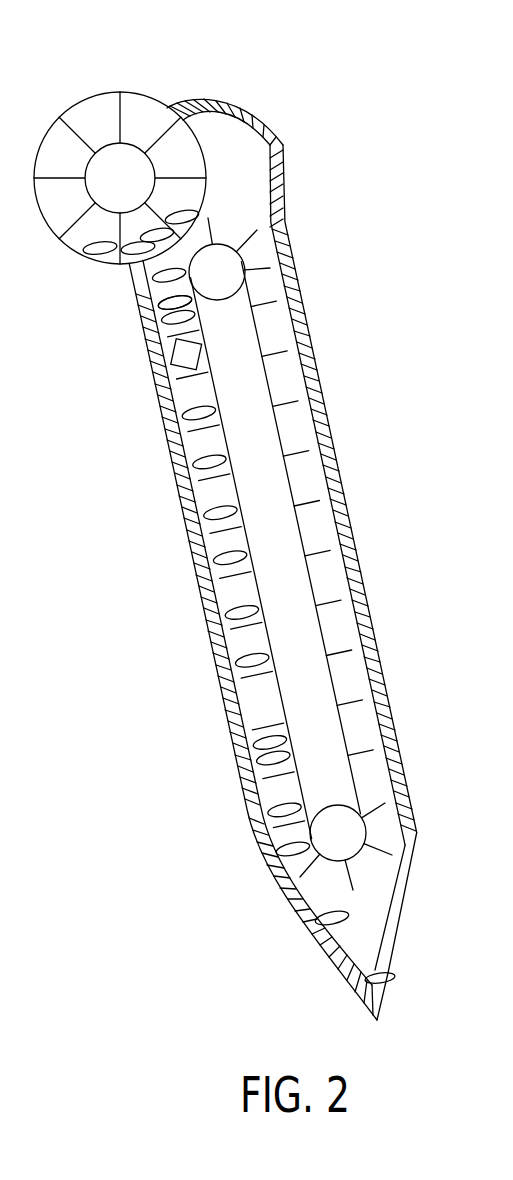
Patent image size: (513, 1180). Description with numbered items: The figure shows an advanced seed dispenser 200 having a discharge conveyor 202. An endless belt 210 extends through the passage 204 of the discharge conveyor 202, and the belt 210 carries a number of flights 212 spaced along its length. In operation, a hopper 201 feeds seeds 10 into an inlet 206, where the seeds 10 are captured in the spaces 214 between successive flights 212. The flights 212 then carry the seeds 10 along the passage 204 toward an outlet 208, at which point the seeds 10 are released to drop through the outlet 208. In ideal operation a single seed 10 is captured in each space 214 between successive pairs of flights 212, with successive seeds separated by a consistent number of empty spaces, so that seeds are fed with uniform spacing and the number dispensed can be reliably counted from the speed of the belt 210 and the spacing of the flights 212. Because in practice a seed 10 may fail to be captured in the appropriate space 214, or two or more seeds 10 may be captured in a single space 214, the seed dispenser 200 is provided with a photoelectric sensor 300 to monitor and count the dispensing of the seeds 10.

The seed dispenser 200 is at (305, 88).
The hopper 201 is at (62, 250).
The discharge conveyor 202 is at (292, 251).
The passage 204 is at (288, 597).
The inlet 206 is at (127, 265).
The outlet 208 is at (387, 922).
The endless belt 210 is at (266, 320).
The flights 212 is at (290, 457).
The spaces 214 is at (217, 537).
The photoelectric sensor 300 is at (160, 367).
The seeds 10 is at (242, 660).